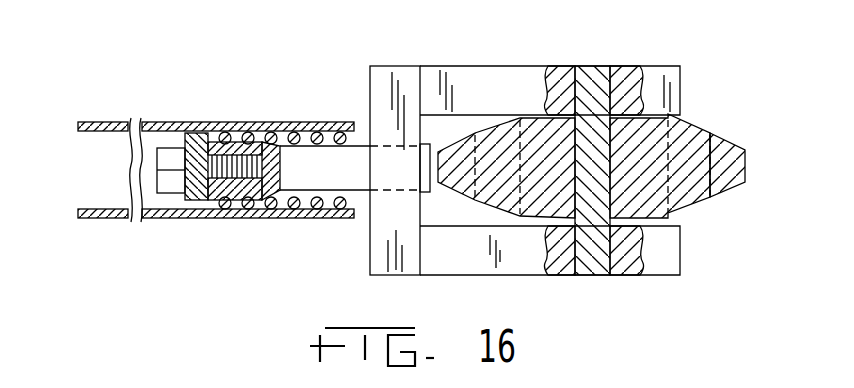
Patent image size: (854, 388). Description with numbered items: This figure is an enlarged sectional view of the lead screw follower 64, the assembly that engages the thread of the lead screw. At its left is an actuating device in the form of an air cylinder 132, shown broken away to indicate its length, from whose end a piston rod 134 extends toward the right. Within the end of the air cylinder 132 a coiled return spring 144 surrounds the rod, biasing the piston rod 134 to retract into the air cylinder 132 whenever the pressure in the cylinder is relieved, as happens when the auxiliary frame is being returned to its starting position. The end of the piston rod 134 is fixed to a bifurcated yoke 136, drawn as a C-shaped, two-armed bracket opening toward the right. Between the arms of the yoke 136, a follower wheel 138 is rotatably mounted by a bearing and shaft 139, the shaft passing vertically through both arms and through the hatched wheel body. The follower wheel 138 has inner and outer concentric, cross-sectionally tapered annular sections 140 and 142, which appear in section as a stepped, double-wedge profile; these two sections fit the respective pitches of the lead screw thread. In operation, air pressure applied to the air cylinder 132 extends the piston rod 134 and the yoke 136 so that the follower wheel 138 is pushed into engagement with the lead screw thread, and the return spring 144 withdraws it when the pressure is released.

The lead screw follower 64 is at (310, 92).
The air cylinder 132 is at (180, 220).
The piston rod 134 is at (330, 170).
The bifurcated yoke 136 is at (358, 249).
The follower wheel 138 is at (653, 101).
The bearing and shaft 139 is at (592, 276).
The inner annular section 140 is at (692, 217).
The outer annular section 142 is at (735, 198).
The coiled return spring 144 is at (263, 131).